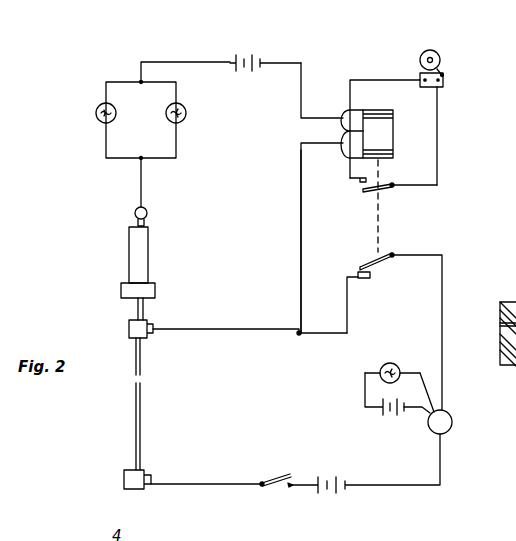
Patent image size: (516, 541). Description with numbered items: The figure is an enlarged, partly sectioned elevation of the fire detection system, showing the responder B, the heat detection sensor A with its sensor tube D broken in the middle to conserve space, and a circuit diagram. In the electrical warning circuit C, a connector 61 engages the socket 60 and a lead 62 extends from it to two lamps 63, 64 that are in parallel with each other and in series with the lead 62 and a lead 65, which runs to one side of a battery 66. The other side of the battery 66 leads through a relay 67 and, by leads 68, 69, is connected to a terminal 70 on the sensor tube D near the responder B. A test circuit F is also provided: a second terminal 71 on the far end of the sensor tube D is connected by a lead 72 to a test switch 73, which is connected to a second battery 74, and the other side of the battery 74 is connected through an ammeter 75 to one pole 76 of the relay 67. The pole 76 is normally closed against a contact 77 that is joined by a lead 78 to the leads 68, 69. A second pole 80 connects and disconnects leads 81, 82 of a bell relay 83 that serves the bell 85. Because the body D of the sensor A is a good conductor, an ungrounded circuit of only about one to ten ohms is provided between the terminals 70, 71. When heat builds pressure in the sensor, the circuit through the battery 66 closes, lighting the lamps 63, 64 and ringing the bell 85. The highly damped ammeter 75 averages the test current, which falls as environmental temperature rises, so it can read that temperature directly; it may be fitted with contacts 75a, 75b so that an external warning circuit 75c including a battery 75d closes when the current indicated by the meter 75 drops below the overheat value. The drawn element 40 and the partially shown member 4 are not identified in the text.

The actuator device 40 is at (158, 288).
The socket 60 is at (147, 213).
The connector 61 is at (138, 208).
The lead 62 is at (142, 189).
The lamp 63 is at (97, 116).
The lamp 64 is at (187, 115).
The lead 65 is at (178, 62).
The battery 66 is at (268, 60).
The relay 67 is at (393, 135).
The lead 68 is at (300, 272).
The lead 69 is at (211, 329).
The terminal 70 is at (153, 326).
The second terminal 71 is at (153, 468).
The lead 72 is at (207, 480).
The test switch 73 is at (266, 472).
The second battery 74 is at (342, 474).
The ammeter 75 is at (447, 433).
The contact 75a is at (438, 402).
The contact 75b is at (427, 415).
The external warning circuit 75c is at (394, 369).
The battery 75d is at (383, 409).
The pole 76 is at (387, 252).
The contact 77 is at (366, 279).
The lead 78 is at (352, 334).
The second pole 80 is at (363, 195).
The lead 81 is at (437, 165).
The lead 82 is at (387, 80).
The bell relay 83 is at (444, 87).
The bell 85 is at (440, 55).
The hatched member 4 is at (508, 350).
The sensor A is at (131, 426).
The responder B is at (128, 262).
The electrical warning circuit C is at (135, 58).
The sensor tube D is at (140, 400).
The test circuit F is at (213, 489).